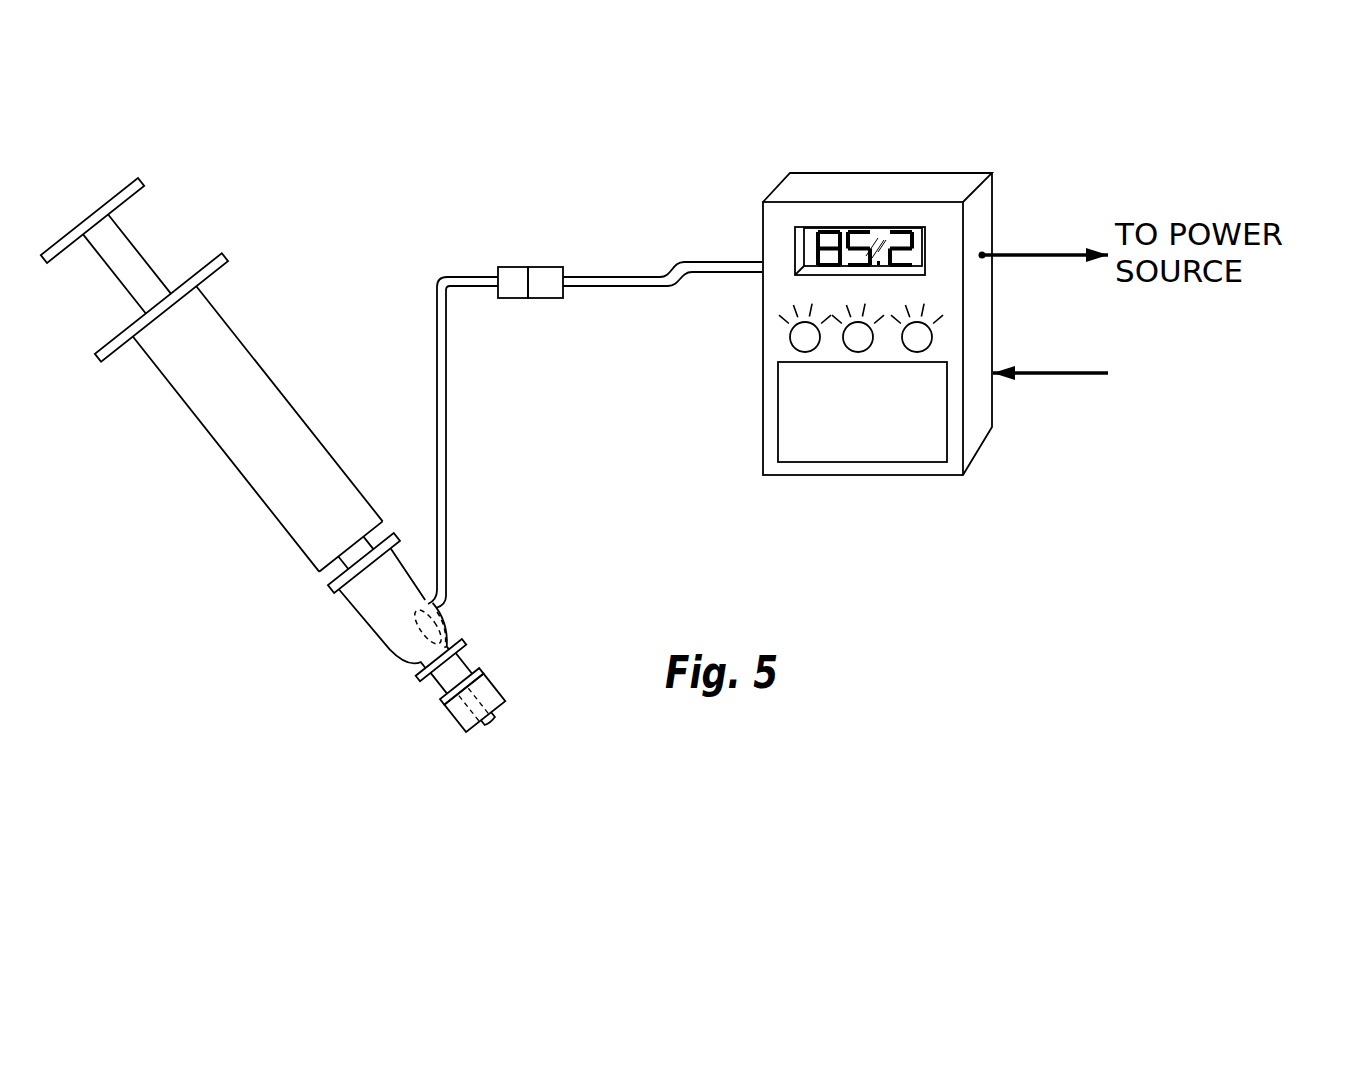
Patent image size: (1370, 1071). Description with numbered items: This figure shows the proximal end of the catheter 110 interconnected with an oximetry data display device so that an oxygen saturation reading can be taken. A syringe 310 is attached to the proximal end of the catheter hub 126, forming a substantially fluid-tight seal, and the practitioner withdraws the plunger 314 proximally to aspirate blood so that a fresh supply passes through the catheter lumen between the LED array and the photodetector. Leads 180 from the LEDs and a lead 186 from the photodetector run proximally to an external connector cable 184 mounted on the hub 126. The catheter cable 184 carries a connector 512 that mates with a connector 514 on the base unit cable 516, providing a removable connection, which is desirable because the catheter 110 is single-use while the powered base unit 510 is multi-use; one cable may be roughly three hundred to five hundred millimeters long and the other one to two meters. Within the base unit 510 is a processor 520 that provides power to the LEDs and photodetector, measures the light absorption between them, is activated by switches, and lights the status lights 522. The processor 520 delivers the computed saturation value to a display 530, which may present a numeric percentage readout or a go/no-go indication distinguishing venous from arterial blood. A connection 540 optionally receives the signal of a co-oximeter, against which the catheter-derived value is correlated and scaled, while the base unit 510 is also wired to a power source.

The catheter 110 is at (500, 677).
The catheter hub 126 is at (442, 618).
The leads 180 is at (518, 734).
The connector cable 184 is at (446, 421).
The lead 186 is at (498, 756).
The syringe 310 is at (259, 358).
The plunger 314 is at (147, 256).
The base unit 510 is at (874, 326).
The connector 512 is at (516, 268).
The connector 514 is at (547, 268).
The base unit cable 516 is at (662, 270).
The processor 520 is at (883, 462).
The status lights 522 is at (794, 346).
The display 530 is at (917, 227).
The connection 540 is at (1052, 375).